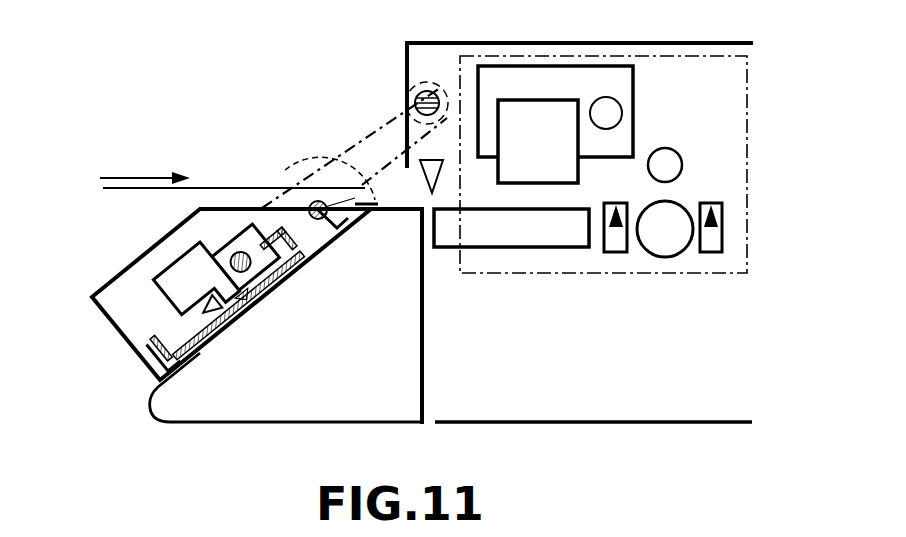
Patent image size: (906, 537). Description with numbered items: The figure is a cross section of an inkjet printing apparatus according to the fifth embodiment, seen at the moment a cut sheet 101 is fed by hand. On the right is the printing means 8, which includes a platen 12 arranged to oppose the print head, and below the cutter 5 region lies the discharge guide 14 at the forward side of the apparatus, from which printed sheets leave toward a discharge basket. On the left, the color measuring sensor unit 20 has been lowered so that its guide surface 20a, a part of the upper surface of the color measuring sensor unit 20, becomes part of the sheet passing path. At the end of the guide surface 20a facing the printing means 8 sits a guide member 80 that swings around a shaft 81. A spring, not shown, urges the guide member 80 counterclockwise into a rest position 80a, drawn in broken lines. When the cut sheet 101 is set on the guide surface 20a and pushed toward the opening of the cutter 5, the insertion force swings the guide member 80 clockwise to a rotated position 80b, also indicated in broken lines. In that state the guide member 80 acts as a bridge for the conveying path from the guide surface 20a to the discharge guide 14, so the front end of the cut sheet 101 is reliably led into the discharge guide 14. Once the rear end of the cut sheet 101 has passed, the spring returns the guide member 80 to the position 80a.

The cutter 5 is at (428, 186).
The printing means 8 is at (590, 207).
The platen 12 is at (535, 235).
The discharge guide 14 is at (313, 259).
The color measuring sensor unit 20 is at (205, 260).
The guide surface 20a is at (222, 207).
The guide member 80 is at (331, 119).
The position 80a is at (288, 173).
The position 80b is at (354, 200).
The shaft 81 is at (332, 222).
The cut sheet 101 is at (142, 189).